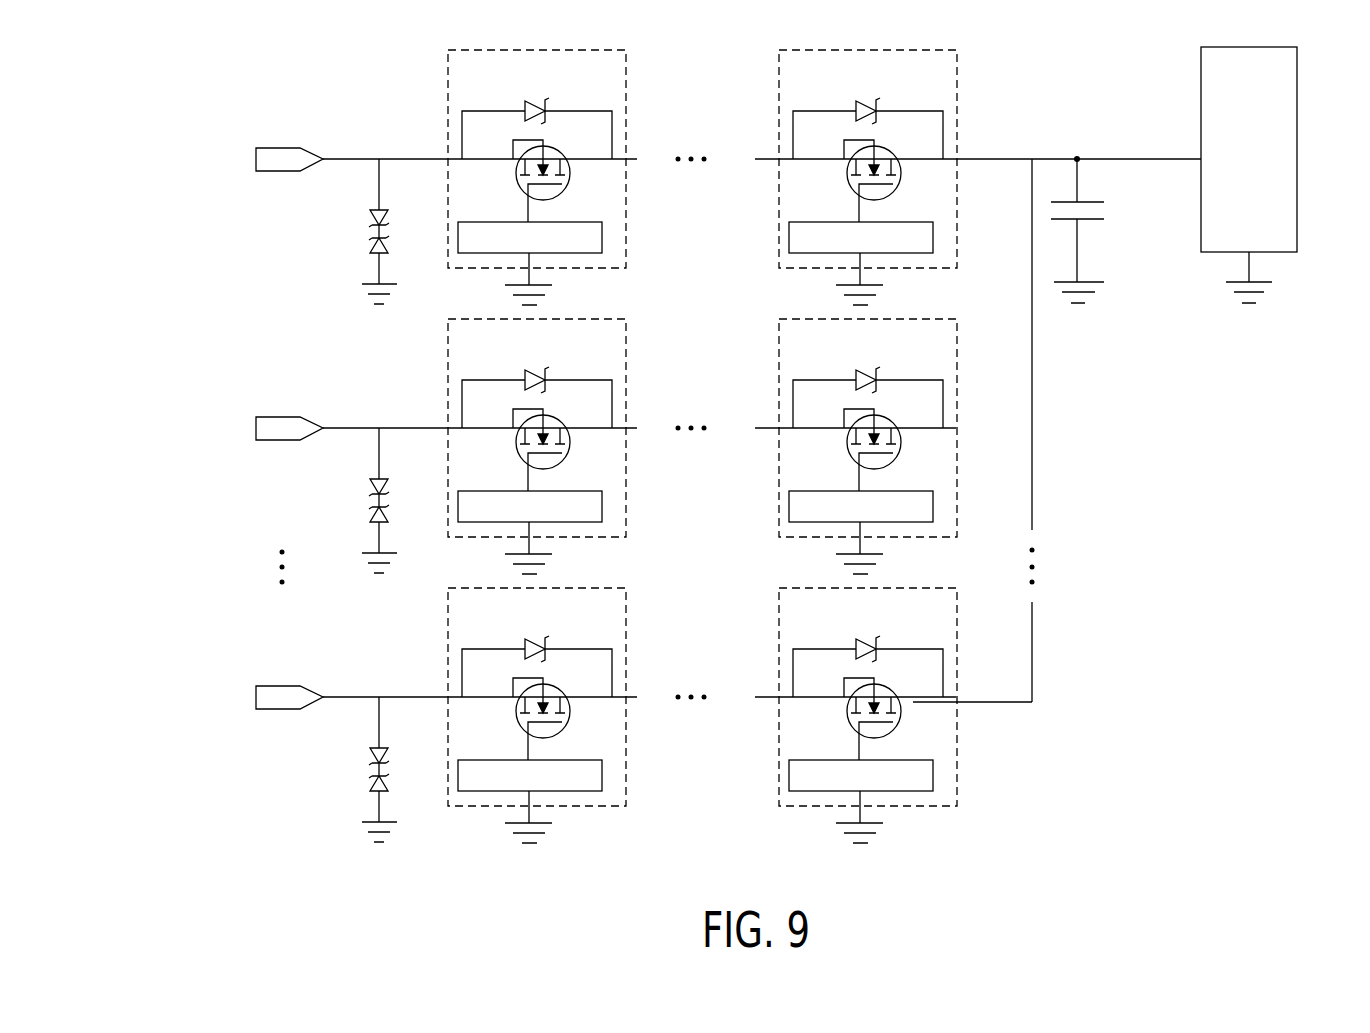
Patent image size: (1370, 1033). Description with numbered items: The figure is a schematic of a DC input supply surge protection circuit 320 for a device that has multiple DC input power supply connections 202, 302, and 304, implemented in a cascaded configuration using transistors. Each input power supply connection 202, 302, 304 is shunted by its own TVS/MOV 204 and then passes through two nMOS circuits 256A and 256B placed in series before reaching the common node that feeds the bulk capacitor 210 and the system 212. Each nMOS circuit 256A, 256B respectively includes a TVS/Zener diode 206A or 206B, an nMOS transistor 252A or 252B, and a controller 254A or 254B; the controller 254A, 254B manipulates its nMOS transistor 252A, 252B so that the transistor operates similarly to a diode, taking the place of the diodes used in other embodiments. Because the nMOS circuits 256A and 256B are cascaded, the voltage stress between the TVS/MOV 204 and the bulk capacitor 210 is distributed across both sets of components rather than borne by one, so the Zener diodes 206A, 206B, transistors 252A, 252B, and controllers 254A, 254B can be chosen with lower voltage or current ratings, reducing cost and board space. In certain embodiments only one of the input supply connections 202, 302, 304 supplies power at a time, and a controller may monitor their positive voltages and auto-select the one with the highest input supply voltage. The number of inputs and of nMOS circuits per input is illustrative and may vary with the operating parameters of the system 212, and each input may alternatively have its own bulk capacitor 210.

The DC input supply surge protection circuit 320 is at (231, 55).
The input power supply connection 202 is at (285, 148).
The input power supply connection 302 is at (244, 418).
The input power supply connection 304 is at (244, 687).
The TVS/MOV 204 is at (388, 232).
The TVS/Zener diode 206A is at (540, 105).
The nMOS transistor 252A is at (570, 178).
The controller 254A is at (602, 237).
The nMOS circuit 256A is at (626, 90).
The TVS/Zener diode 206B is at (870, 389).
The nMOS transistor 252B is at (898, 450).
The controller 254B is at (829, 532).
The nMOS circuit 256B is at (899, 428).
The bulk capacitor 210 is at (1090, 201).
The system 212 is at (1298, 156).